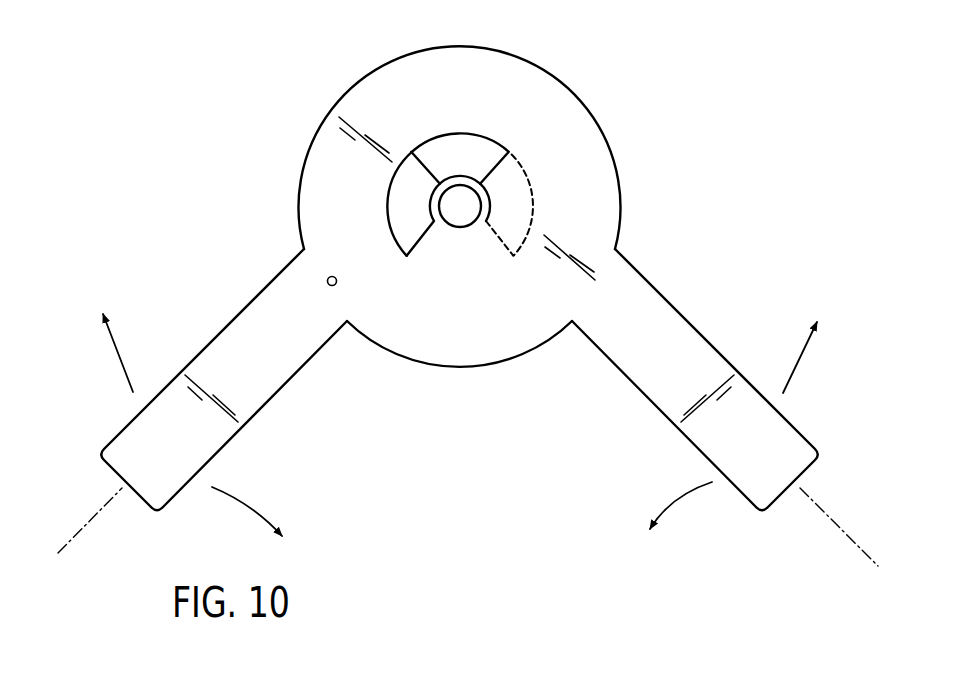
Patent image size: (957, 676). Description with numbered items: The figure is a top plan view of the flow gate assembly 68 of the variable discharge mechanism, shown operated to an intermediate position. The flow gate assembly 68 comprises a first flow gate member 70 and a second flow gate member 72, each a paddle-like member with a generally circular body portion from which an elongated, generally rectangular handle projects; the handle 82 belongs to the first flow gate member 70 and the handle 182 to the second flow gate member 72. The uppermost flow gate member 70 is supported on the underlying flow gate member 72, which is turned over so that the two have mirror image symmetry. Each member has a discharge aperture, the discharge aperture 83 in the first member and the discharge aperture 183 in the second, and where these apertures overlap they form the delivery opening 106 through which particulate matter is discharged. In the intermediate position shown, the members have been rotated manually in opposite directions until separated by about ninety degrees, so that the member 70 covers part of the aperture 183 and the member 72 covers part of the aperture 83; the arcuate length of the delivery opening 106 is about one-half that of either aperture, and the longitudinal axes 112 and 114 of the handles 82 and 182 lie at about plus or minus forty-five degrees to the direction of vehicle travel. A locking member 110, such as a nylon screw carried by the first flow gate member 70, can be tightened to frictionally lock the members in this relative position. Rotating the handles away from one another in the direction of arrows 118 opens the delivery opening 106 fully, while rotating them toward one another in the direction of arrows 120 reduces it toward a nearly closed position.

The flow gate assembly 68 is at (482, 503).
The first flow gate member 70 is at (431, 376).
The second flow gate member 72 is at (630, 283).
The handle 82 is at (281, 371).
The discharge aperture 83 is at (392, 204).
The delivery opening 106 is at (464, 140).
The locking member 110 is at (327, 276).
The longitudinal axis 112 is at (88, 522).
The longitudinal axis 114 is at (838, 525).
The arrows 118 is at (120, 354).
The arrows 120 is at (245, 507).
The handle 182 is at (738, 468).
The discharge aperture 183 is at (533, 222).